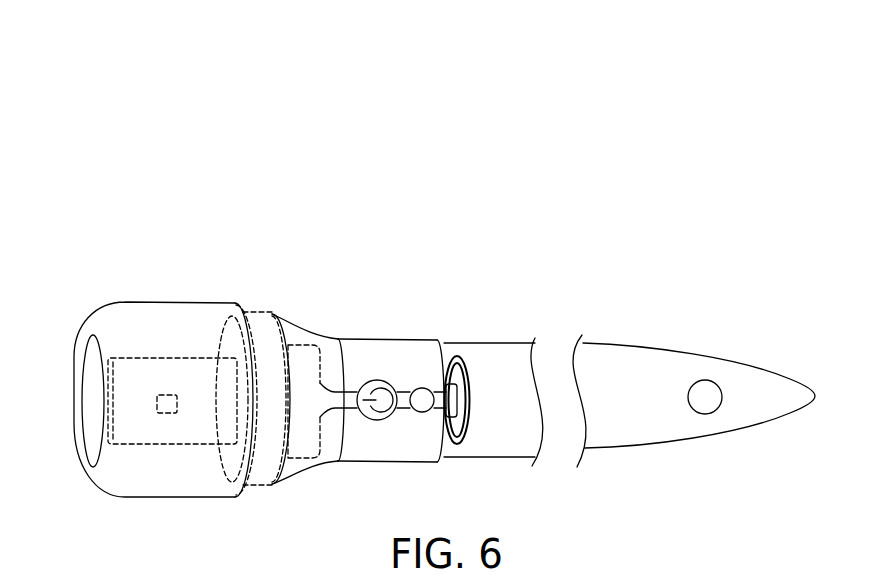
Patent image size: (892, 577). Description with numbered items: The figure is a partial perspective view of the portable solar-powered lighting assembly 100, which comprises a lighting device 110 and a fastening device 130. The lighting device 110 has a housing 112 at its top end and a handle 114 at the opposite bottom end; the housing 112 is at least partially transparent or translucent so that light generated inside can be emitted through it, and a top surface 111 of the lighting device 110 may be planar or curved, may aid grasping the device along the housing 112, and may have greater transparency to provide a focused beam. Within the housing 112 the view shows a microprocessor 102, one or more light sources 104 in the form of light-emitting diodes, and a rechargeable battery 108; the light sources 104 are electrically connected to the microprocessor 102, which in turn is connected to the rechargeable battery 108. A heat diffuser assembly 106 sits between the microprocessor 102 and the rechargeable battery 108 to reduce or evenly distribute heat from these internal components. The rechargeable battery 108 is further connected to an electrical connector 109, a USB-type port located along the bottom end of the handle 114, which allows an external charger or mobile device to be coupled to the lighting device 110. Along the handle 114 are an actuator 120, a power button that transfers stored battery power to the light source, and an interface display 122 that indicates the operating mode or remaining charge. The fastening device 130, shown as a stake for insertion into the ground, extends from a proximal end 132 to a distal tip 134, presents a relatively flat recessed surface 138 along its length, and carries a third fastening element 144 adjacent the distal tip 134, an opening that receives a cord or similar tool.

The solar-powered lighting assembly 100 is at (120, 112).
The microprocessor 102 is at (160, 443).
The light source 104 is at (177, 405).
The heat diffuser assembly 106 is at (268, 315).
The rechargeable battery 108 is at (308, 460).
The electrical connector 109 is at (453, 400).
The lighting device 110 is at (147, 270).
The top surface 111 is at (73, 418).
The housing 112 is at (170, 307).
The handle 114 is at (382, 342).
The actuator 120 is at (377, 420).
The interface display 122 is at (423, 412).
The fastening device 130 is at (522, 237).
The proximal end 132 is at (498, 348).
The distal tip 134 is at (770, 362).
The recessed surface 138 is at (632, 355).
The third fastening element 144 is at (688, 397).